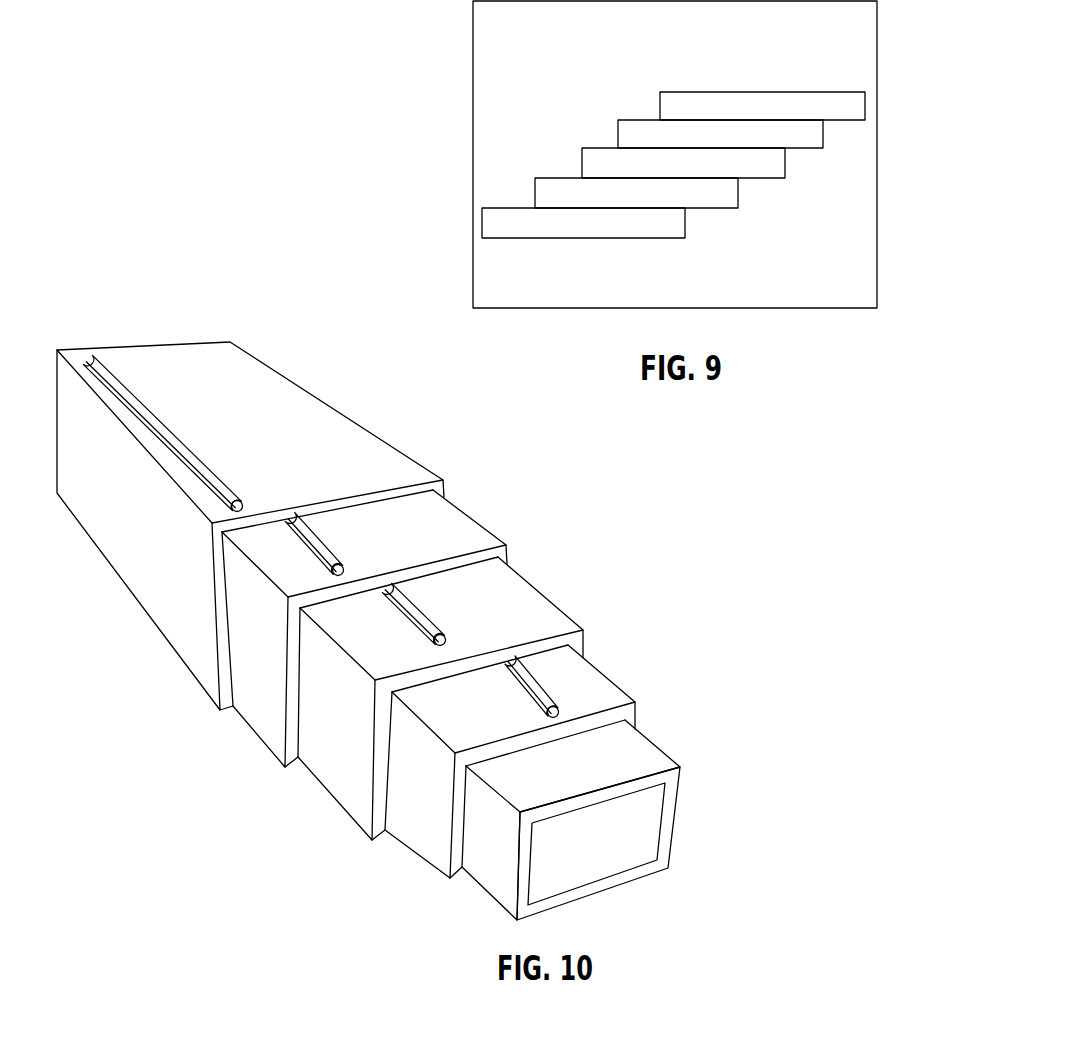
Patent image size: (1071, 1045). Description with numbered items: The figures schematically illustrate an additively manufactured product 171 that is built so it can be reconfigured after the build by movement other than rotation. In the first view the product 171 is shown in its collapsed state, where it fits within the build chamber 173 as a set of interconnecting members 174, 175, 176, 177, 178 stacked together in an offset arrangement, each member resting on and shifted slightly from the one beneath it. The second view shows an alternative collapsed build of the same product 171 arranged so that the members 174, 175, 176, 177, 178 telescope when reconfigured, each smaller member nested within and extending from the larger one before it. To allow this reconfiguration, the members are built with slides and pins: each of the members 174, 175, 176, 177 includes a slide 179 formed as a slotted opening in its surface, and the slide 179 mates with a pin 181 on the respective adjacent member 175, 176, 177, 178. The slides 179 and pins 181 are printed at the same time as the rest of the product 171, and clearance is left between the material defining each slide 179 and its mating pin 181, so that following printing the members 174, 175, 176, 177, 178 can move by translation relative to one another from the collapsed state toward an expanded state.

In FIG. 9, the product 171 is at (603, 102).
In FIG. 10, the product 171 is at (168, 330).
In FIG. 9, the build chamber 173 is at (877, 43).
In FIG. 9, the member 174 is at (685, 228).
In FIG. 10, the member 174 is at (302, 386).
In FIG. 9, the member 175 is at (738, 198).
In FIG. 10, the member 175 is at (263, 726).
In FIG. 9, the member 176 is at (785, 168).
In FIG. 10, the member 176 is at (340, 785).
In FIG. 9, the member 177 is at (823, 135).
In FIG. 10, the member 177 is at (523, 780).
In FIG. 9, the member 178 is at (865, 100).
In FIG. 10, the member 178 is at (496, 883).
In FIG. 10, the slide 179 is at (520, 670).
In FIG. 10, the pin 181 is at (560, 705).